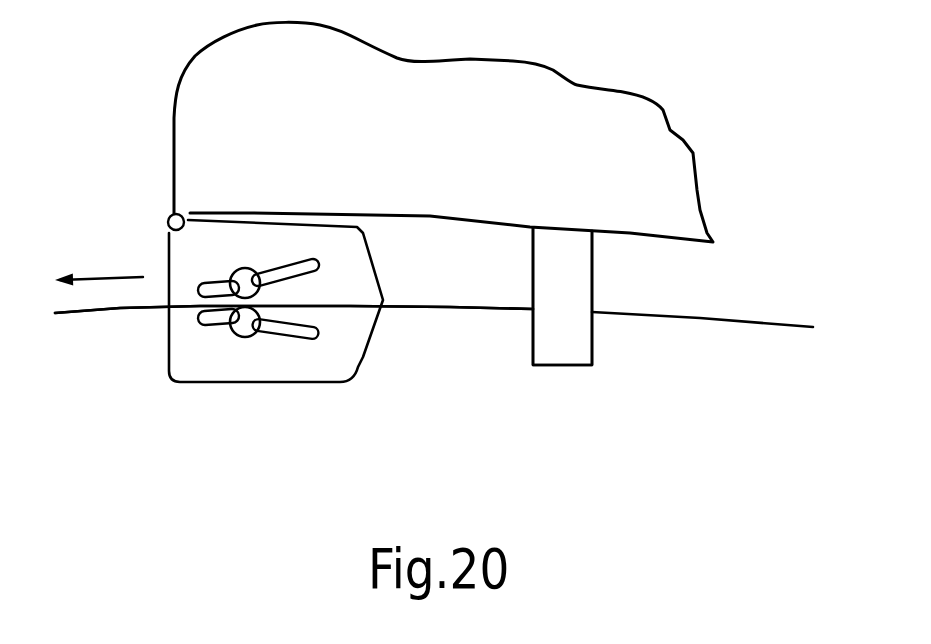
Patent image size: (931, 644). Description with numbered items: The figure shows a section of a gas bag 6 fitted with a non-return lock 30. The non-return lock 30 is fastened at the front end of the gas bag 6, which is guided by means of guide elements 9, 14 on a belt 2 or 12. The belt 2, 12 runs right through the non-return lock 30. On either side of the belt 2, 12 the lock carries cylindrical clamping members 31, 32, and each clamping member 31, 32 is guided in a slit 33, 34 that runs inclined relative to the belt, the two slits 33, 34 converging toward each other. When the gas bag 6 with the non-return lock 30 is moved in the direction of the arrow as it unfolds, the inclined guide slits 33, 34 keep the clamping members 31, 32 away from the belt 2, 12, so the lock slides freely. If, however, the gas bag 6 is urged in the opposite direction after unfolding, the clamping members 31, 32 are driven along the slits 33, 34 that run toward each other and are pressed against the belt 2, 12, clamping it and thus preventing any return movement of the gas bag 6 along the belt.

The gas bag 6 is at (613, 118).
The belt 2 is at (763, 318).
The belt 12 is at (294, 309).
The guide element 9 is at (573, 335).
The guide element 14 is at (562, 296).
The non-return lock 30 is at (225, 400).
The cylindrical clamping member 31 is at (248, 282).
The cylindrical clamping member 32 is at (247, 323).
The slit 33 is at (307, 268).
The slit 34 is at (307, 340).